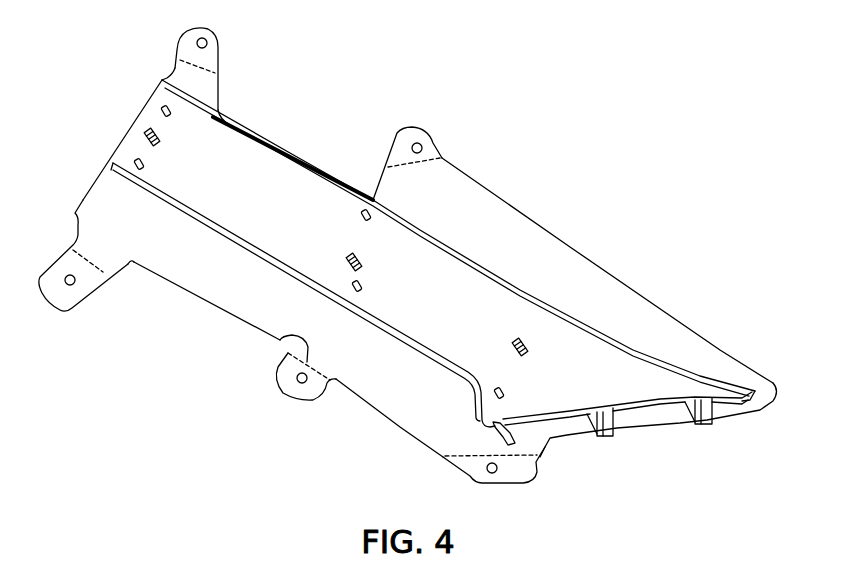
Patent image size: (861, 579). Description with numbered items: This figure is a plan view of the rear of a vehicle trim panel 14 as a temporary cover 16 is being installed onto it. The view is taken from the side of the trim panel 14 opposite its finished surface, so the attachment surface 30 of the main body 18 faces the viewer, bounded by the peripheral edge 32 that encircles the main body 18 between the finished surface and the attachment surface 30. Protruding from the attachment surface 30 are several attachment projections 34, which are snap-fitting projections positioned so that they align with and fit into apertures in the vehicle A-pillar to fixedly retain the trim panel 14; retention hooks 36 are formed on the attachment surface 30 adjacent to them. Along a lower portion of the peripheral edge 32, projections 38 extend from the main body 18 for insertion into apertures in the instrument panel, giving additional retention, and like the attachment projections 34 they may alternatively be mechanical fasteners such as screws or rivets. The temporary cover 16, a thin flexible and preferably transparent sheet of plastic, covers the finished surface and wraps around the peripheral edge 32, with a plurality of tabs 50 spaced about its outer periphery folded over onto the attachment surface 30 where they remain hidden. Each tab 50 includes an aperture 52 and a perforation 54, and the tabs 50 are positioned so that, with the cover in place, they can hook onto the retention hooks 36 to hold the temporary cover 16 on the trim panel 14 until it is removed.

The trim panel 14 is at (290, 159).
The temporary cover 16 is at (496, 195).
The main body 18 is at (620, 373).
The attachment surface 30 is at (480, 297).
The peripheral edge 32 is at (557, 304).
The attachment projections 34 is at (148, 136).
The retention hooks 36 is at (169, 114).
The projections 38 is at (703, 423).
The tabs 50 is at (188, 45).
The aperture 52 is at (208, 43).
The perforation 54 is at (203, 73).